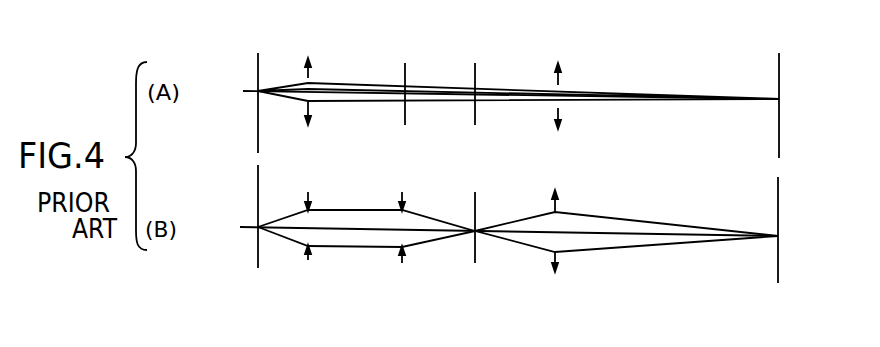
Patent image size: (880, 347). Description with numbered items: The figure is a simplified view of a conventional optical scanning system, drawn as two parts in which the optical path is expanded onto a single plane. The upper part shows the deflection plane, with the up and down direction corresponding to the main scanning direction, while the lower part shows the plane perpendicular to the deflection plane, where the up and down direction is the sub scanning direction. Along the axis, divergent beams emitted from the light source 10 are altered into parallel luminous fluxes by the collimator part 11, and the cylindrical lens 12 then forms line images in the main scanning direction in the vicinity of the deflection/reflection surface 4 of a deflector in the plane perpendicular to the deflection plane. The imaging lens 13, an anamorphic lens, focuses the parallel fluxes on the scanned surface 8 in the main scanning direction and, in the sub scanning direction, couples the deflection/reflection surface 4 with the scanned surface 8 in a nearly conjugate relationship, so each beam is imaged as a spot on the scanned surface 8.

The light source 10 is at (259, 55).
The collimator part 11 is at (310, 62).
The cylindrical lens 12 is at (406, 63).
The deflection/reflection surface 4 is at (476, 63).
The imaging lens 13 is at (560, 65).
The scanned surface 8 is at (779, 59).